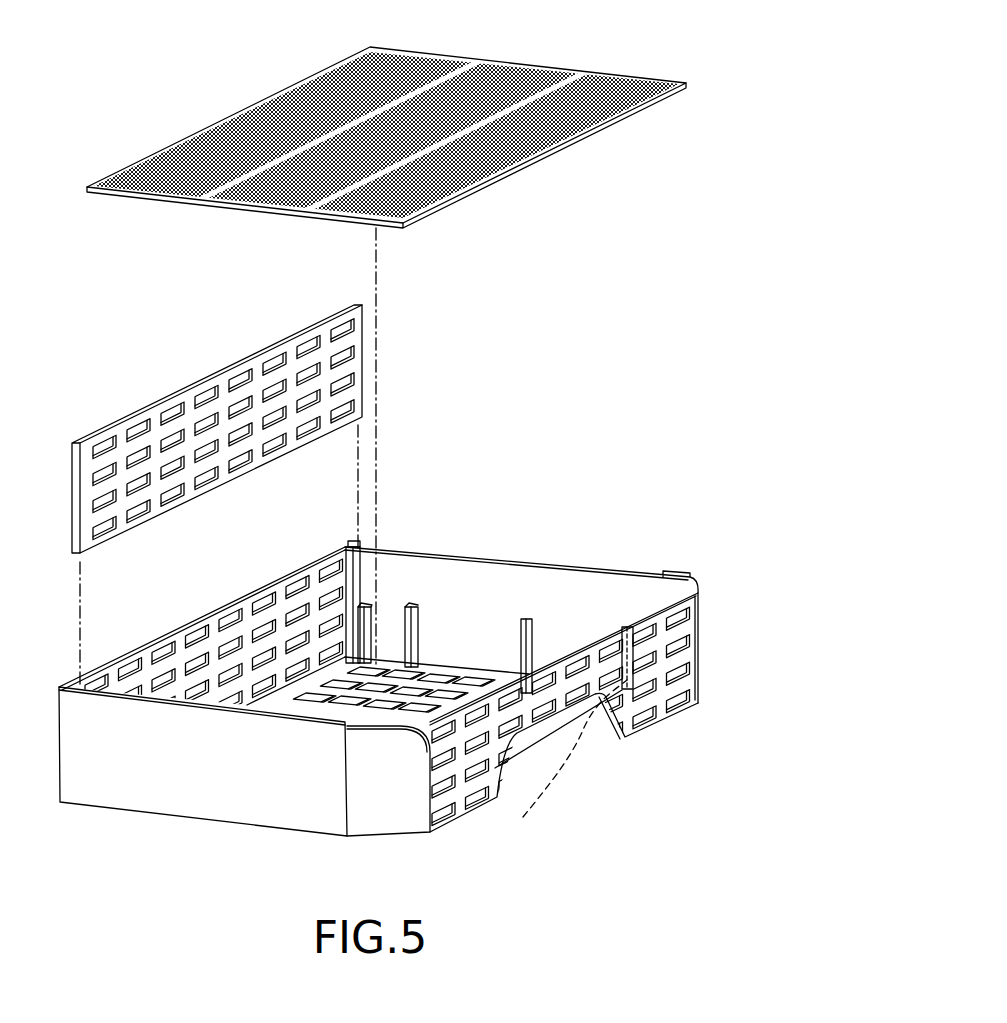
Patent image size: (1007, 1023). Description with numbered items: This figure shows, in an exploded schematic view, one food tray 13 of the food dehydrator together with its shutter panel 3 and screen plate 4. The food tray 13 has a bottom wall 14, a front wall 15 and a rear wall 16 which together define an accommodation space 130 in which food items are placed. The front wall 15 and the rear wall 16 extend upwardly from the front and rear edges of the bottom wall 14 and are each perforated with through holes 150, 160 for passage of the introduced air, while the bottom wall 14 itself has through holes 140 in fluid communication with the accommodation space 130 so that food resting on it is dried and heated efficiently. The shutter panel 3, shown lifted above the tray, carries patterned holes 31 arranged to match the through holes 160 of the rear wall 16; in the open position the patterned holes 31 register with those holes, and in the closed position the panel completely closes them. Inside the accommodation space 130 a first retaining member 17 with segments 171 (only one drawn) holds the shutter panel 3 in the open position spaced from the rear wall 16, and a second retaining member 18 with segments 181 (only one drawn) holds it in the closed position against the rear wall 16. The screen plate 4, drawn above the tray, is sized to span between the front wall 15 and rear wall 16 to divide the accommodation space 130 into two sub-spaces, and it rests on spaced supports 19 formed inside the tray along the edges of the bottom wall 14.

The screen plate 4 is at (212, 148).
The shutter panel 3 is at (213, 429).
The patterned holes 31 is at (210, 404).
The food tray 13 is at (428, 643).
The accommodation space 130 is at (584, 604).
The rear wall 16 is at (202, 657).
The through holes 160 is at (160, 655).
The through holes 150 is at (682, 633).
The front wall 15 is at (622, 700).
The bottom wall 14 is at (411, 568).
The through holes 140 is at (493, 677).
The first retaining member 17 is at (390, 670).
The segments 171 is at (290, 577).
The segments 181 is at (362, 606).
The second retaining member 18 is at (352, 548).
The spaced supports 19 is at (527, 662).